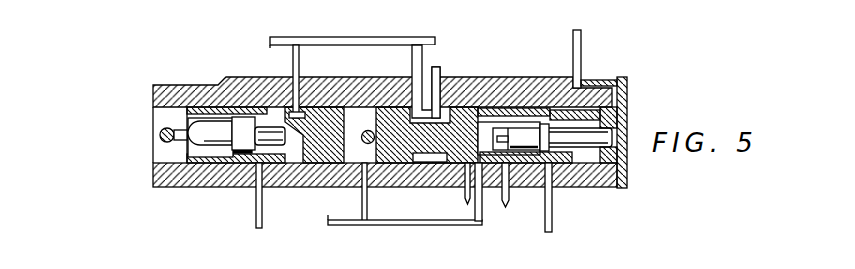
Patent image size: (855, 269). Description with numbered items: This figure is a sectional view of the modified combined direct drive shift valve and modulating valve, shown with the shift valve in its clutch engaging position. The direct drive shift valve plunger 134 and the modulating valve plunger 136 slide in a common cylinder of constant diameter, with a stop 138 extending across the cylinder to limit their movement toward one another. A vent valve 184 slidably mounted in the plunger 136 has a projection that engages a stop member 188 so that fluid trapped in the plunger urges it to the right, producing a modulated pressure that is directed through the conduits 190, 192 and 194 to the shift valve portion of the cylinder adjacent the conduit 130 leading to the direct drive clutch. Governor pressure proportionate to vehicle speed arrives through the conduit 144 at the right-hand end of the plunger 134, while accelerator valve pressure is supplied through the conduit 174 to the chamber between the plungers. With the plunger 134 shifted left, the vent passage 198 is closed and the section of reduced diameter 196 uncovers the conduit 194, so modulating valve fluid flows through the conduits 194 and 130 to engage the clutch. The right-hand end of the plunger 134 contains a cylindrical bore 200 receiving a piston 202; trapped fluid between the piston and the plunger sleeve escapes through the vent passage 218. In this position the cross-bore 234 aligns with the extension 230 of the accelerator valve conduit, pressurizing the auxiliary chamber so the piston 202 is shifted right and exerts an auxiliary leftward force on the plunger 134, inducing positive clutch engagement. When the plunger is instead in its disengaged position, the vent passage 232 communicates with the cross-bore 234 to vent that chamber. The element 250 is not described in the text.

The conduit 130 is at (441, 69).
The plunger 134 is at (388, 167).
The plunger 136 is at (317, 157).
The stop 138 is at (368, 130).
The conduit 144 is at (582, 47).
The conduit 174 is at (364, 226).
The vent valve 184 is at (212, 125).
The stop member 188 is at (160, 135).
The conduit 190 is at (299, 62).
The conduit 192 is at (361, 37).
The conduit 194 is at (419, 68).
The section of reduced diameter 196 is at (480, 120).
The vent passage 198 is at (462, 200).
The cylindrical bore 200 is at (505, 126).
The piston 202 is at (552, 77).
The vent passage 218 is at (553, 204).
The extension 230 is at (483, 222).
The vent passage 232 is at (508, 203).
The cross-bore 234 is at (490, 112).
The member 250 is at (471, 5).